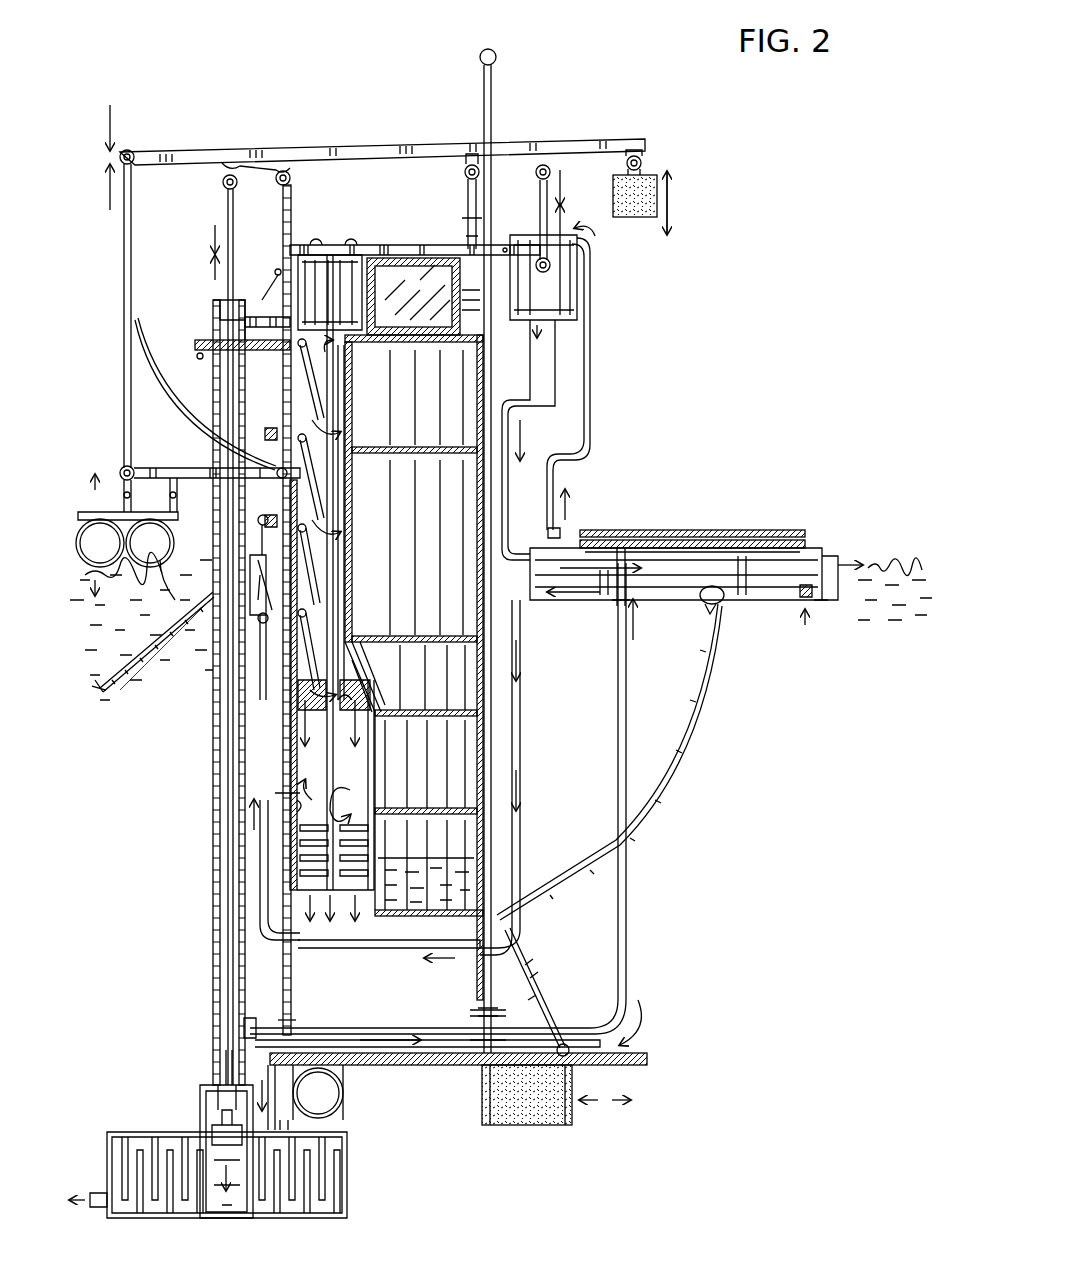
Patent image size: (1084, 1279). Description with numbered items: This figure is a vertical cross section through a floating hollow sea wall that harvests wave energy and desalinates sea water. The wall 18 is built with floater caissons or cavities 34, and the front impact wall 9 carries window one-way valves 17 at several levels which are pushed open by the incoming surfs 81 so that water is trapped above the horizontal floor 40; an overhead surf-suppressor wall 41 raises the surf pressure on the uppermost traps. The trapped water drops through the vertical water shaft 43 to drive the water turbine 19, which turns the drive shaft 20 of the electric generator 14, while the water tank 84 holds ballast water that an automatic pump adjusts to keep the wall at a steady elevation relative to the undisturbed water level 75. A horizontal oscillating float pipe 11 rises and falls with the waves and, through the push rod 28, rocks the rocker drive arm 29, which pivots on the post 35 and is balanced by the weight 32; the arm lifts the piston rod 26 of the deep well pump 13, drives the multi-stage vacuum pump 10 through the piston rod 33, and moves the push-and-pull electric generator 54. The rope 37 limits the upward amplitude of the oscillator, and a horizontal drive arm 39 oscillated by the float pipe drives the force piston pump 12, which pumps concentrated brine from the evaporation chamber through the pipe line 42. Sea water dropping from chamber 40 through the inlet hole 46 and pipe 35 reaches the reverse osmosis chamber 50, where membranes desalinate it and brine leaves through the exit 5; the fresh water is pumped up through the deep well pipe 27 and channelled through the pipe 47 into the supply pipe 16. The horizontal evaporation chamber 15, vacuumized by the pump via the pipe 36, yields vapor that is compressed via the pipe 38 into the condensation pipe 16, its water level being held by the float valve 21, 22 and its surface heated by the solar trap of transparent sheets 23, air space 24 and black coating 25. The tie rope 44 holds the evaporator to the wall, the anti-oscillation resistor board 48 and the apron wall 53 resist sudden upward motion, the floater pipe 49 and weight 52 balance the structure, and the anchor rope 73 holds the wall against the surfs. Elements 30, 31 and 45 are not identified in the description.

The exit 5 is at (96, 1192).
The front impact wall 9 is at (290, 750).
The multi-stage vacuum pump 10 is at (560, 287).
The oscillating float pipe 11 is at (158, 568).
The force piston pump 12 is at (213, 630).
The deep well water pump 13 is at (200, 1095).
The electric generator 14 is at (330, 270).
The evaporation chamber 15 is at (742, 575).
The condensation pipe 16 is at (712, 608).
The window one-way valves 17 is at (320, 395).
The wall 18 is at (346, 538).
The water turbine 19 is at (300, 862).
The drive shaft 20 is at (336, 420).
The float valve 21 is at (716, 588).
The float valve 22 is at (808, 585).
The transparent sheets 23 is at (598, 532).
The air space 24 is at (640, 540).
The flat black paint 25 is at (690, 548).
The piston rod 26 is at (228, 250).
The deep well pipe 27 is at (213, 688).
The push rod 28 is at (131, 290).
The rocker drive arm 29 is at (350, 155).
The ball 30 is at (497, 60).
The vertical rod 31 is at (484, 98).
The weight 32 is at (658, 200).
The piston rod 33 is at (468, 202).
The cavity 34 is at (420, 300).
The post 35 is at (283, 220).
The pipe 36 is at (592, 343).
The rope 37 is at (210, 352).
The pipe 38 is at (510, 440).
The horizontal drive arm 39 is at (205, 470).
The horizontal floor 40 is at (365, 675).
The surf-suppressor wall 41 is at (213, 320).
The pipe line 42 is at (262, 822).
The vertical water shaft 43 is at (365, 762).
The tie rope 44 is at (665, 784).
The inner cylinder 45 is at (290, 735).
The inlet hole 46 is at (292, 805).
The pipe 47 is at (626, 900).
The anti-oscillation resistor board 48 is at (420, 1066).
The floater pipe 49 is at (335, 1108).
The reverse osmosis chamber 50 is at (320, 1190).
The weight 52 is at (535, 1105).
The apron wall 53 is at (484, 998).
The push-and-pull electric generator 54 is at (483, 294).
The anchor rope 73 is at (213, 690).
The undisturbed water level 75 is at (900, 560).
The surfs 81 is at (175, 520).
The water tank 84 is at (450, 880).